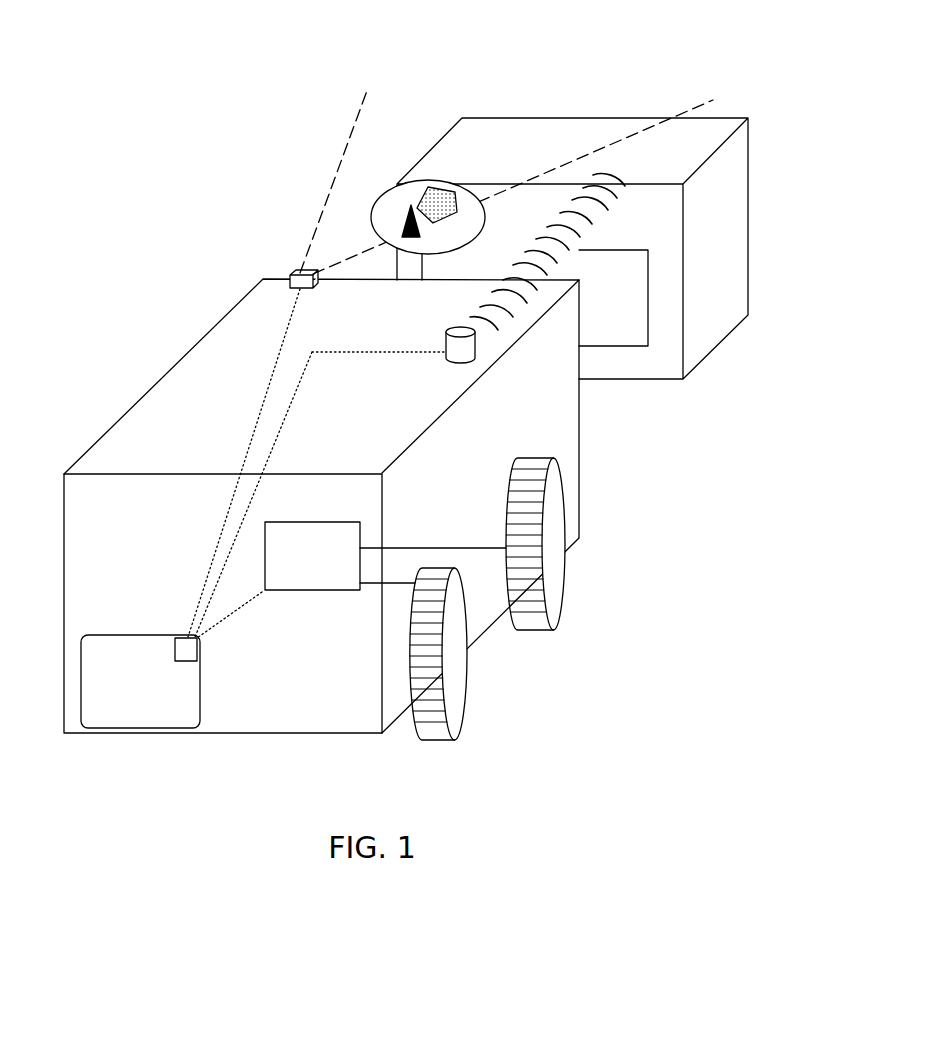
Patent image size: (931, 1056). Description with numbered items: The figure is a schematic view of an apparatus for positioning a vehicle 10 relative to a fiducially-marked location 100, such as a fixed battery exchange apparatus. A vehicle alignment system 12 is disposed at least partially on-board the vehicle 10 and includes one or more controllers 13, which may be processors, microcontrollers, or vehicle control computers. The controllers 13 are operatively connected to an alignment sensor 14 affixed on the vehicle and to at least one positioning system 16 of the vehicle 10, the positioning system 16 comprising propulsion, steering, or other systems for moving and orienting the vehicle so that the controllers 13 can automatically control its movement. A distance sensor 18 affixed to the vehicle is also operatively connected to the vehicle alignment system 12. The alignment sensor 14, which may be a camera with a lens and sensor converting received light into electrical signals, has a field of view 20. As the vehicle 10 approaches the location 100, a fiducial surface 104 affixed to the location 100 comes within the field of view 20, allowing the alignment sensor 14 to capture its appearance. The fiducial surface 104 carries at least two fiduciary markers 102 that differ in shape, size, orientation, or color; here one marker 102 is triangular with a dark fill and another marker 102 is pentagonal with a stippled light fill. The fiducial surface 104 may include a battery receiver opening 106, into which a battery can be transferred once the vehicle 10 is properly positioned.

The vehicle 10 is at (172, 346).
The vehicle alignment system 12 is at (140, 729).
The controller 13 is at (186, 637).
The alignment sensor 14 is at (303, 272).
The positioning system 16 is at (565, 585).
The distance sensor 18 is at (476, 340).
The field of view 20 is at (733, 87).
The fiducially-marked location 100 is at (681, 392).
The fiduciary marker 102 is at (403, 227).
The fiducial surface 104 is at (378, 187).
The battery receiver opening 106 is at (633, 322).